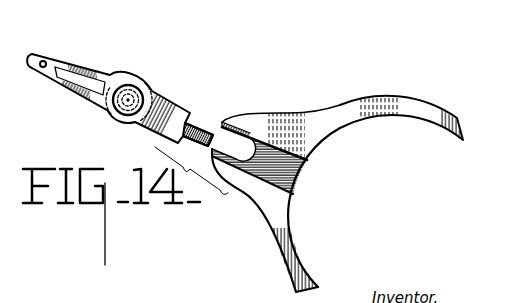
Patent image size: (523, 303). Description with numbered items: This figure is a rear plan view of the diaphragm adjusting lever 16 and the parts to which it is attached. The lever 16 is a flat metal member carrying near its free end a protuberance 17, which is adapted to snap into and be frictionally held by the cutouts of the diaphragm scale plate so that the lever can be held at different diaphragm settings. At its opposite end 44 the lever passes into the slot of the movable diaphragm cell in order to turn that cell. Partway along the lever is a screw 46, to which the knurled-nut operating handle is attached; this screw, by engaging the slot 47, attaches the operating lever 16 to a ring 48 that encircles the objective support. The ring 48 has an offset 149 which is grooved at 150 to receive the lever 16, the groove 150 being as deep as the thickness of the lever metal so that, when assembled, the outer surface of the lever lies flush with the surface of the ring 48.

The diaphragm adjusting lever 16 is at (92, 68).
The protuberance 17 is at (46, 61).
The lever end 44 is at (205, 128).
The screw 46 is at (142, 93).
The slot 47 is at (245, 133).
The ring 48 is at (408, 99).
The offset 149 is at (268, 193).
The groove 150 is at (296, 181).